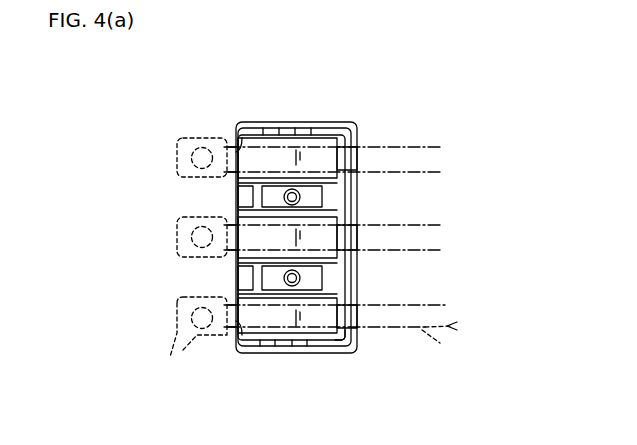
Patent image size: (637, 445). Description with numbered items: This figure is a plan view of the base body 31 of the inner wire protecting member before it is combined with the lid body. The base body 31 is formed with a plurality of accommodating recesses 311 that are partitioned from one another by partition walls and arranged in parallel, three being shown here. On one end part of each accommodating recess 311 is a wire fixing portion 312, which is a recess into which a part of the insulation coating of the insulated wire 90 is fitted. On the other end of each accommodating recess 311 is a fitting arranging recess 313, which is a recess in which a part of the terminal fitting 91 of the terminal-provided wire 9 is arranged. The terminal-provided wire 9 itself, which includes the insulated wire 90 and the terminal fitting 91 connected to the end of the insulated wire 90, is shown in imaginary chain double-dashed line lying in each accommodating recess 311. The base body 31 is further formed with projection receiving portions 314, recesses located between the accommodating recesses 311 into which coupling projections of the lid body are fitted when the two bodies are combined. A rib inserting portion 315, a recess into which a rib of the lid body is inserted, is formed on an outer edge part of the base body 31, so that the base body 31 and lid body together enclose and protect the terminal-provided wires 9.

The base body 31 is at (395, 83).
The accommodating recess 311 is at (320, 298).
The wire fixing portion 312 is at (350, 313).
The fitting arranging recess 313 is at (244, 137).
The projection receiving portion 314 is at (283, 201).
The rib inserting portion 315 is at (350, 343).
The terminal fitting 91 is at (187, 352).
The insulated wire 90 is at (437, 344).
The terminal-provided wire 9 is at (471, 327).